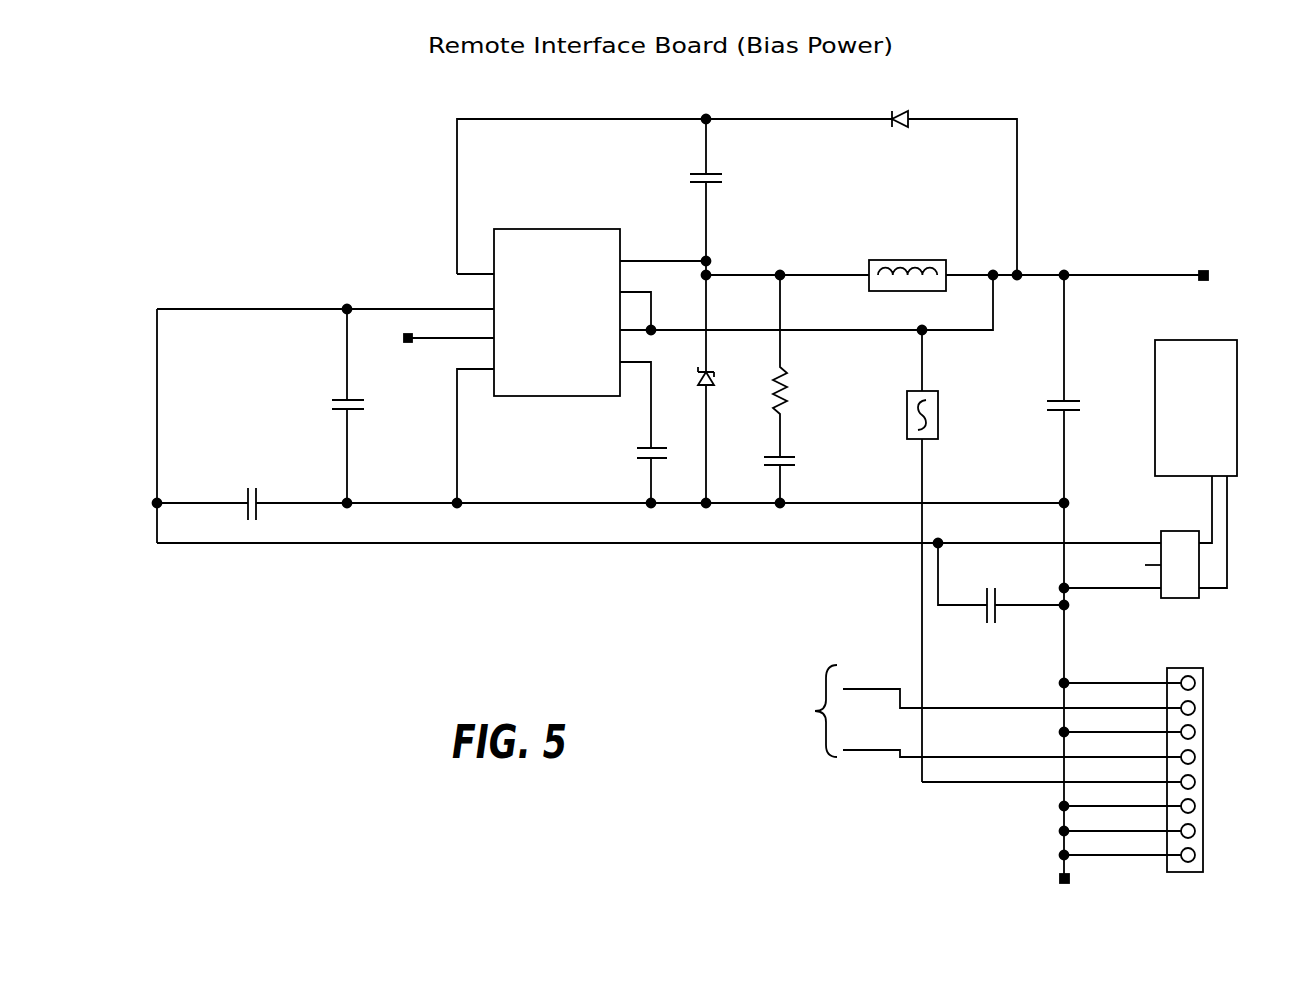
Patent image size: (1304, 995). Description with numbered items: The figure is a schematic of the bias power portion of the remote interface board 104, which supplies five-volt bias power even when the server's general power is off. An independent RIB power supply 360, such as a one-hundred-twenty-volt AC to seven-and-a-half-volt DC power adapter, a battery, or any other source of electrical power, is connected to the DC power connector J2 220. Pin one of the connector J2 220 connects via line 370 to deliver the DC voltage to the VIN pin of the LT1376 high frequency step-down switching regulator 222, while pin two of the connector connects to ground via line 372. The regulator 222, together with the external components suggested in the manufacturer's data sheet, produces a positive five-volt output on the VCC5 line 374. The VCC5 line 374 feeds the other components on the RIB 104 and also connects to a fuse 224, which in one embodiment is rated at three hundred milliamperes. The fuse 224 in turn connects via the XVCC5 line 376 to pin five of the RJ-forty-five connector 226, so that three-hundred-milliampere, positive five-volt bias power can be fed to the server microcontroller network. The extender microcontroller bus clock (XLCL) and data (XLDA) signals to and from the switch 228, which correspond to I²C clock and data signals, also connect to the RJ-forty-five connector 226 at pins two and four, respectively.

The remote interface board 104 is at (302, 180).
The high frequency step-down switching regulator 222 is at (547, 229).
The VCC5 line 374 is at (1093, 275).
The fuse 224 is at (938, 410).
The RIB power supply 360 is at (1155, 372).
The line 370 is at (1085, 543).
The line 372 is at (1085, 588).
The DC power connector J2 220 is at (1199, 598).
The RJ-45 connector 226 is at (1163, 857).
The switch 228 is at (950, 715).
The XVCC5 line 376 is at (1000, 783).